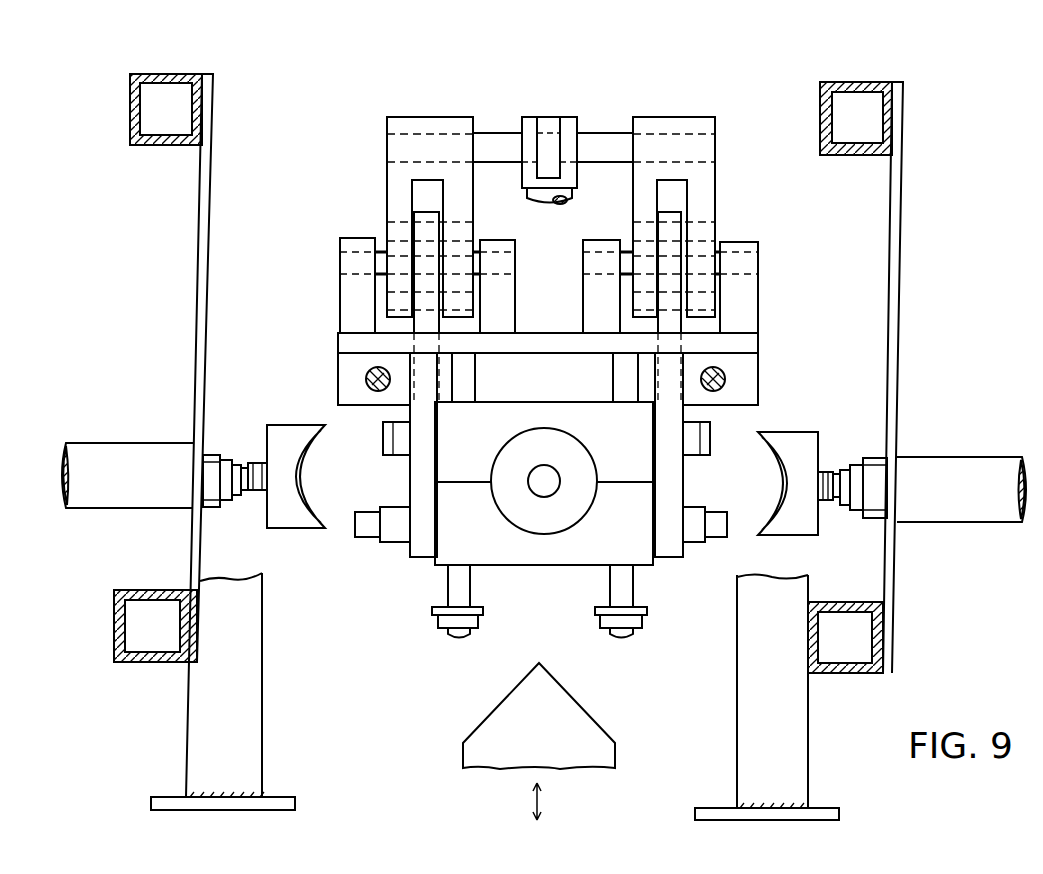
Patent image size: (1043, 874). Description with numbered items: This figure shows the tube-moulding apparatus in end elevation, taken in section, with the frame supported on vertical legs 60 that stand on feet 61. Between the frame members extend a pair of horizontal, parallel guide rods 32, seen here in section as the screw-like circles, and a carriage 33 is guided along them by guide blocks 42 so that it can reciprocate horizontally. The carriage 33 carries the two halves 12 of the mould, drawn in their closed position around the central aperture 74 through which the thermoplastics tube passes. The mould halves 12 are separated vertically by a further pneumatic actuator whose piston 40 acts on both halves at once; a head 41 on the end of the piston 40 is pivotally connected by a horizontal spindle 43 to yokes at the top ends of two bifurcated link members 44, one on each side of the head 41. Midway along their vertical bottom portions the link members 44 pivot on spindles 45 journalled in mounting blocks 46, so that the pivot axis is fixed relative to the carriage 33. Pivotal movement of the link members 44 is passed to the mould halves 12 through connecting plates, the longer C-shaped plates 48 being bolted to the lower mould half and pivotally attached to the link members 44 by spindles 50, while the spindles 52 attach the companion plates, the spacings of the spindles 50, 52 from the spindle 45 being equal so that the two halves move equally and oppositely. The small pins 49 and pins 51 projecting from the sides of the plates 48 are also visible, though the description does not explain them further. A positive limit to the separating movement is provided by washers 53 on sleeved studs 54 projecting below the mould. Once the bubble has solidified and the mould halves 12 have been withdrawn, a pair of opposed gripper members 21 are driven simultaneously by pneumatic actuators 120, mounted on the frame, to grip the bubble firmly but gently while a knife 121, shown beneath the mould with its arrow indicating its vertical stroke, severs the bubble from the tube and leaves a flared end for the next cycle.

The mould halves 12 is at (622, 449).
The gripper members 21 is at (290, 530).
The guide rods 32 is at (368, 382).
The carriage 33 is at (323, 351).
The piston 40 is at (572, 196).
The head 41 is at (526, 118).
The guide blocks 42 is at (350, 362).
The horizontal spindle 43 is at (598, 138).
The bifurcated link members 44 is at (387, 170).
The spindles 45 is at (382, 260).
The mounting blocks 46 is at (348, 288).
The connecting plates 48 is at (415, 470).
The upper pin 49 is at (388, 430).
The spindles 50 is at (392, 294).
The lower pin 51 is at (393, 540).
The spindles 52 is at (462, 230).
The washers 53 is at (437, 626).
The sleeved studs 54 is at (608, 588).
The vertical legs 60 is at (250, 701).
The feet 61 is at (292, 800).
The central aperture 74 is at (553, 483).
The pneumatic actuators 120 is at (117, 443).
The knife 121 is at (550, 748).